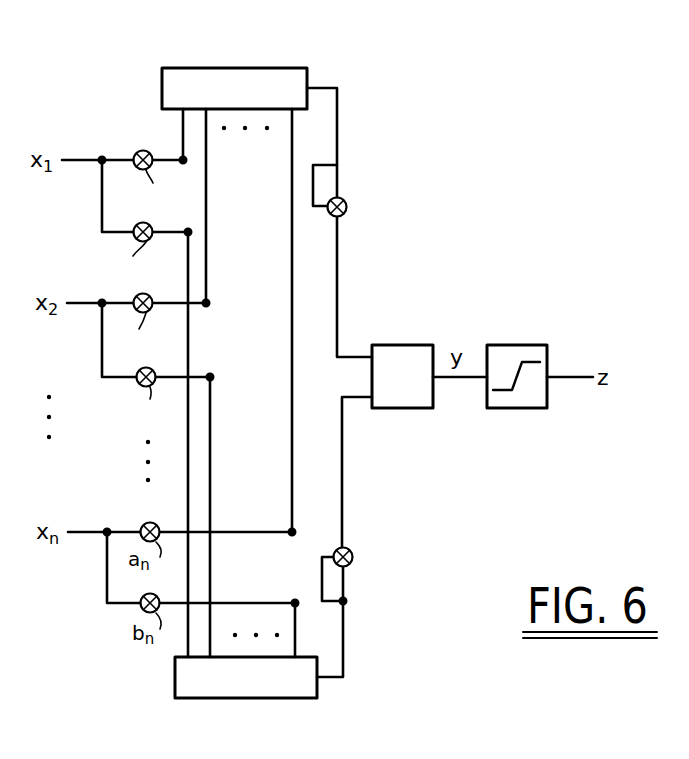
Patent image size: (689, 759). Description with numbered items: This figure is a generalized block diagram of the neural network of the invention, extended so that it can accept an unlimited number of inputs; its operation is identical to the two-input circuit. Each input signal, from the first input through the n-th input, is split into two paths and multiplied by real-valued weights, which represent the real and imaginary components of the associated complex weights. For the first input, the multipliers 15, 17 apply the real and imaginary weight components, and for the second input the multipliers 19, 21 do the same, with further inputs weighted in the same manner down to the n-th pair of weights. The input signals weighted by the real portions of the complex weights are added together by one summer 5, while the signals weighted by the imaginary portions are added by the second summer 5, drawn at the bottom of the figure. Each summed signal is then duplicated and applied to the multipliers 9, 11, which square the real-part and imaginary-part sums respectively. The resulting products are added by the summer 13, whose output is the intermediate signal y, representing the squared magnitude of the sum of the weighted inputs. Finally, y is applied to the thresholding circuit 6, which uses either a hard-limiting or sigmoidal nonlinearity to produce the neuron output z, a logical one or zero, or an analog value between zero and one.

The summer 5 is at (263, 68).
The multiplier 15 is at (143, 150).
The multiplier 17 is at (136, 226).
The multiplier 19 is at (150, 268).
The multiplier 21 is at (150, 367).
The multiplier 9 is at (346, 201).
The multiplier 11 is at (353, 551).
The summer 13 is at (412, 345).
The thresholding circuit 6 is at (522, 345).